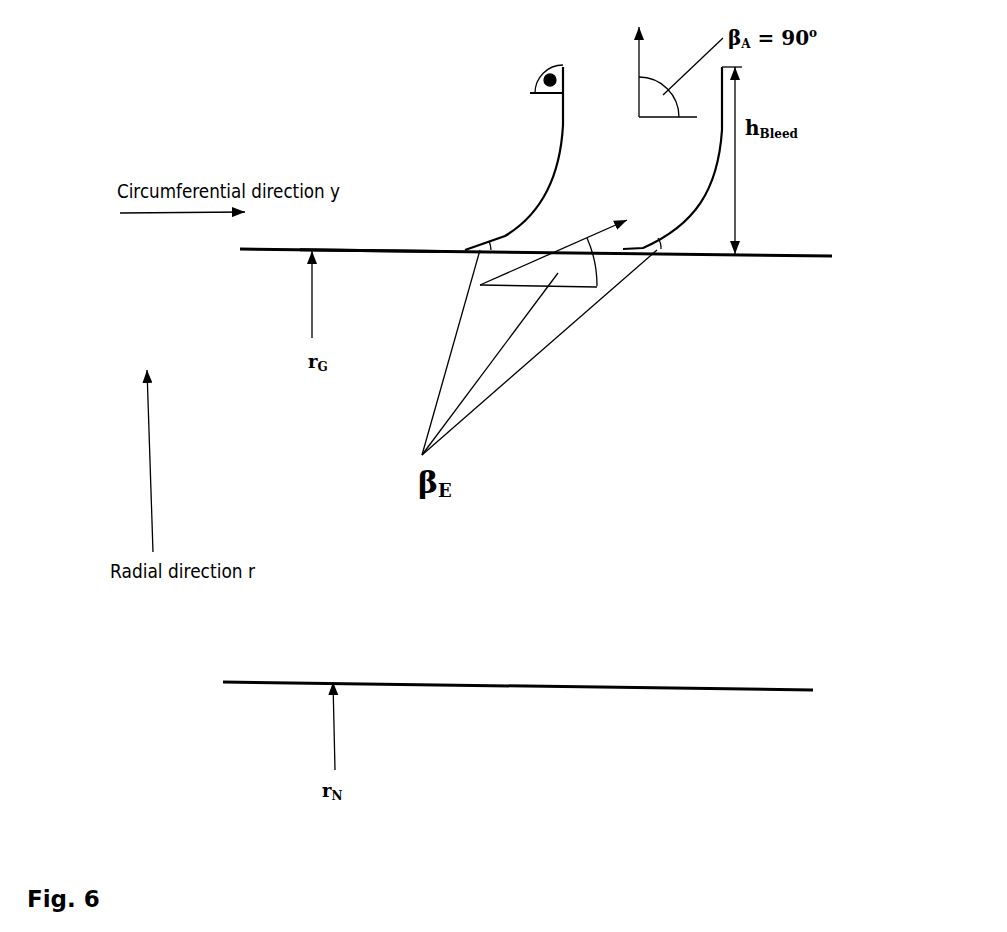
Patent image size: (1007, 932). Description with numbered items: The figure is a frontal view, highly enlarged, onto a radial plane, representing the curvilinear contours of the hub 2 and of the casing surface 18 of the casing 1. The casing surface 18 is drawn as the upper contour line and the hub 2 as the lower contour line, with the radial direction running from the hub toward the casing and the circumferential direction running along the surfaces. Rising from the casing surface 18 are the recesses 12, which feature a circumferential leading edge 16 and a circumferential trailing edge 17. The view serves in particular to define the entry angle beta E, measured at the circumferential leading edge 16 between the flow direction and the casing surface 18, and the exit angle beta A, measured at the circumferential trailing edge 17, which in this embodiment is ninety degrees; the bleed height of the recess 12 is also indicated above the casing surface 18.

The casing 1 is at (752, 253).
The hub 2 is at (685, 685).
The recesses 12 is at (578, 345).
The circumferential leading edge 16 is at (465, 248).
The circumferential trailing edge 17 is at (623, 253).
The casing surface 18 is at (370, 250).